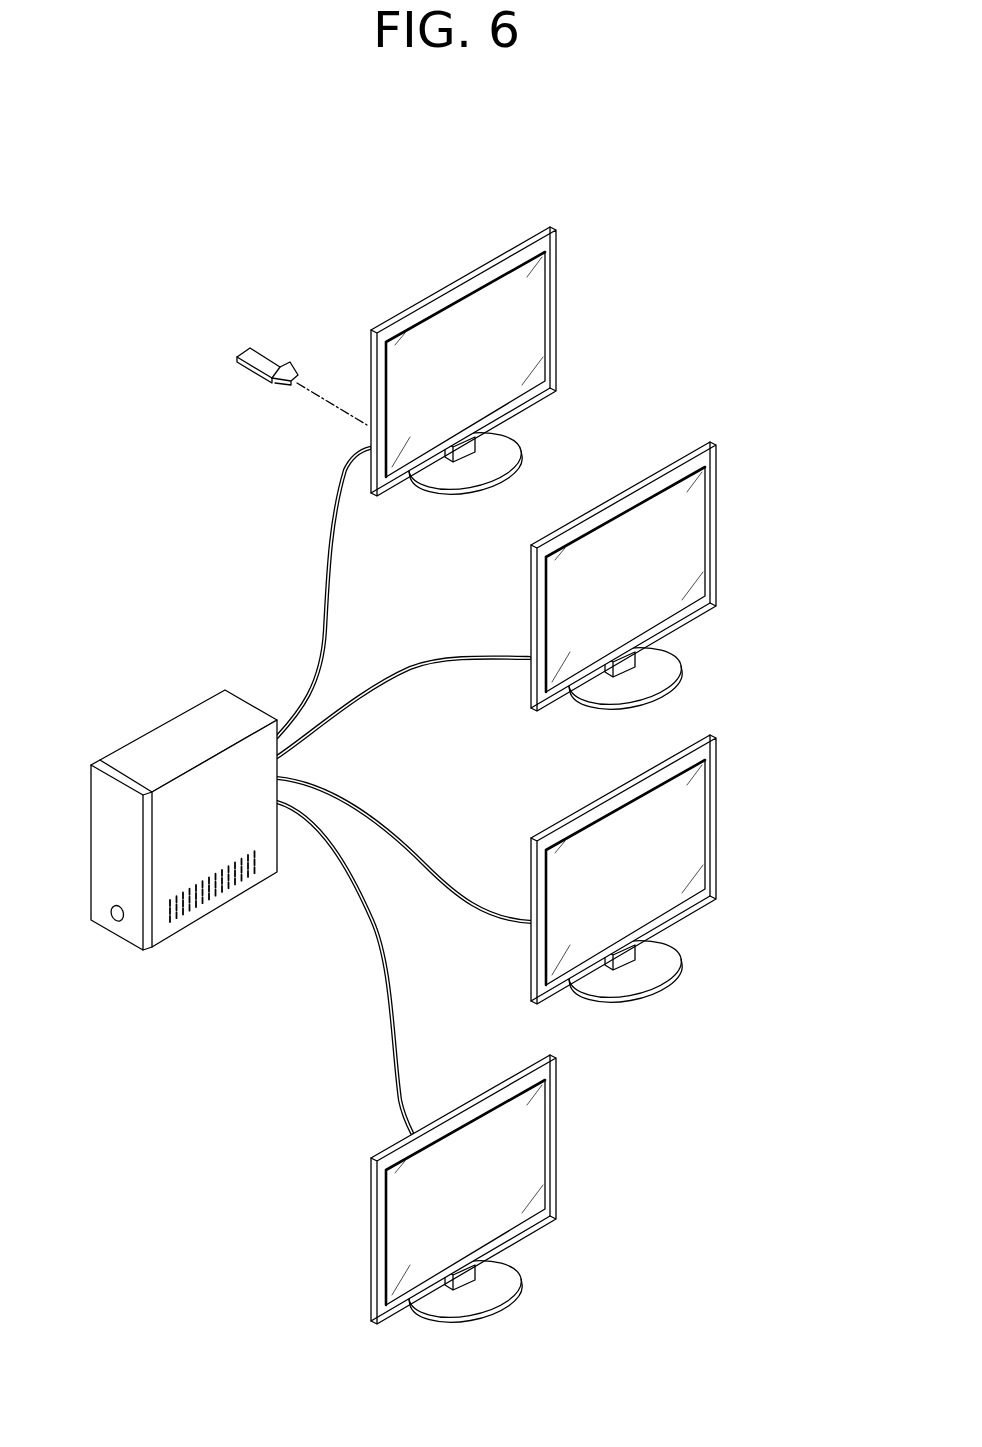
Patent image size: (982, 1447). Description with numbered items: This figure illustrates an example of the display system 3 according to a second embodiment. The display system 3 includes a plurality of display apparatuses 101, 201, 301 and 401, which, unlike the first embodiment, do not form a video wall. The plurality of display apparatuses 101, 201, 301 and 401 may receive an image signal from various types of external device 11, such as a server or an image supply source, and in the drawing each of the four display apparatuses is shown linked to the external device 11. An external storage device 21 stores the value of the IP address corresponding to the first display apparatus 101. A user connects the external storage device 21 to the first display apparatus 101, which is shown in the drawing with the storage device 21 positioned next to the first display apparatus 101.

The display system 3 is at (83, 392).
The external device 11 is at (168, 728).
The external storage device 21 is at (252, 348).
The first display apparatus 101 is at (558, 312).
The display apparatus 201 is at (718, 527).
The display apparatus 301 is at (718, 822).
The display apparatus 401 is at (558, 1142).